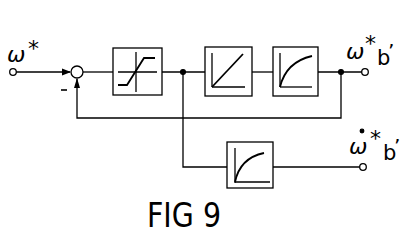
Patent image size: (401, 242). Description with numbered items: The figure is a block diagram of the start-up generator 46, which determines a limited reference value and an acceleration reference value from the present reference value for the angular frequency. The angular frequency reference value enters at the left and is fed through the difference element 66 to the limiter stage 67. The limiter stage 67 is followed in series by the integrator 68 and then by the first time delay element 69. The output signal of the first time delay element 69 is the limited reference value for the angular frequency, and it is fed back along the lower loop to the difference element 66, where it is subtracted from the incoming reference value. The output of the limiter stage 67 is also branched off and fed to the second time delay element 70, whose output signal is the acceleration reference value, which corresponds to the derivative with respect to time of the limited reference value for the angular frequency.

The start-up generator 46 is at (147, 134).
The difference element 66 is at (75, 65).
The limiter stage 67 is at (155, 47).
The integrator 68 is at (243, 46).
The first time delay element 69 is at (310, 46).
The second time delay element 70 is at (273, 182).